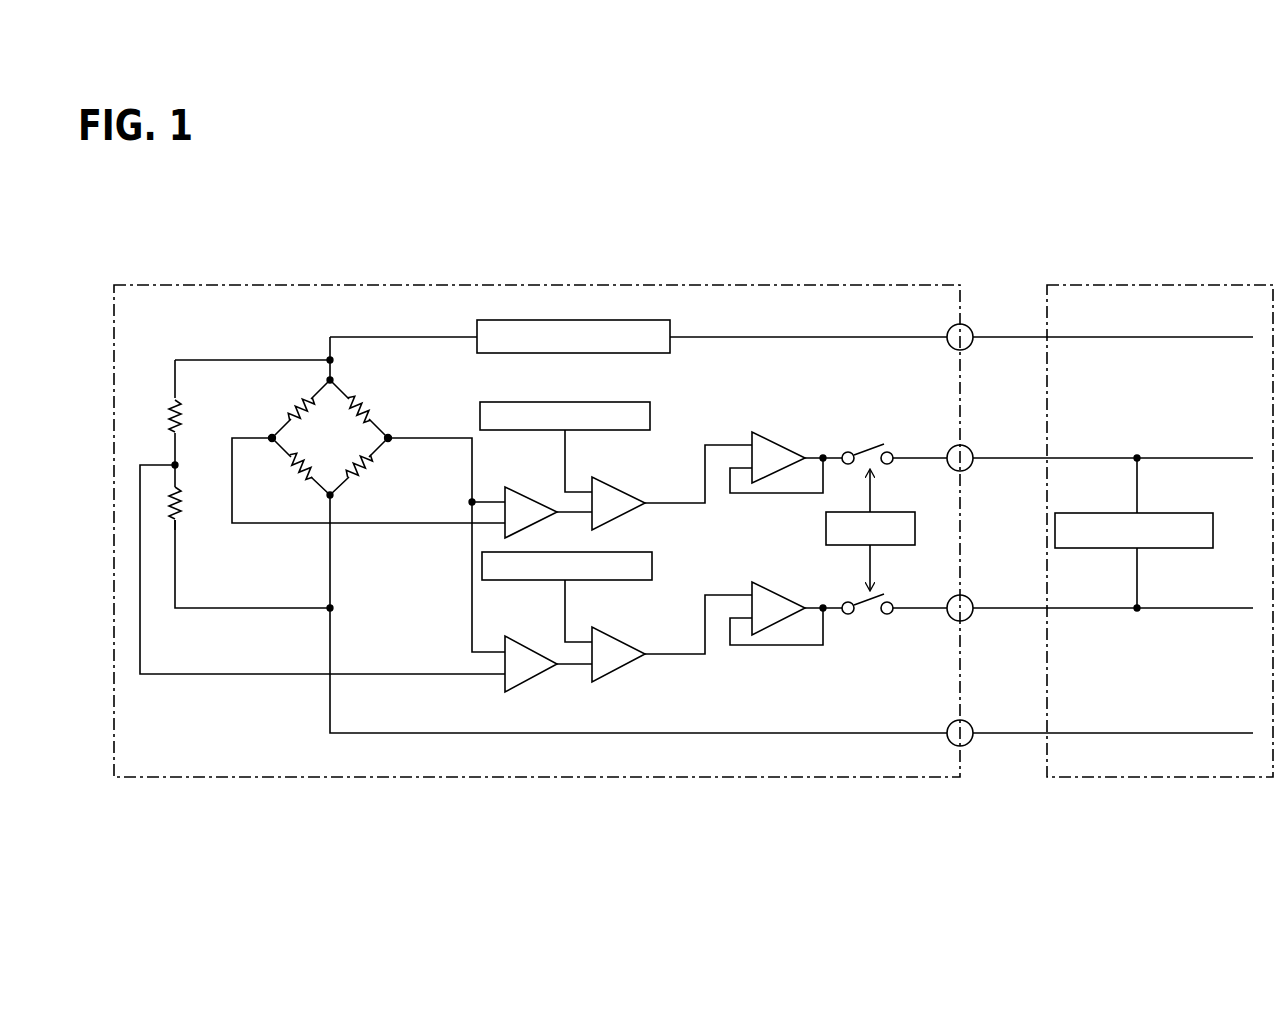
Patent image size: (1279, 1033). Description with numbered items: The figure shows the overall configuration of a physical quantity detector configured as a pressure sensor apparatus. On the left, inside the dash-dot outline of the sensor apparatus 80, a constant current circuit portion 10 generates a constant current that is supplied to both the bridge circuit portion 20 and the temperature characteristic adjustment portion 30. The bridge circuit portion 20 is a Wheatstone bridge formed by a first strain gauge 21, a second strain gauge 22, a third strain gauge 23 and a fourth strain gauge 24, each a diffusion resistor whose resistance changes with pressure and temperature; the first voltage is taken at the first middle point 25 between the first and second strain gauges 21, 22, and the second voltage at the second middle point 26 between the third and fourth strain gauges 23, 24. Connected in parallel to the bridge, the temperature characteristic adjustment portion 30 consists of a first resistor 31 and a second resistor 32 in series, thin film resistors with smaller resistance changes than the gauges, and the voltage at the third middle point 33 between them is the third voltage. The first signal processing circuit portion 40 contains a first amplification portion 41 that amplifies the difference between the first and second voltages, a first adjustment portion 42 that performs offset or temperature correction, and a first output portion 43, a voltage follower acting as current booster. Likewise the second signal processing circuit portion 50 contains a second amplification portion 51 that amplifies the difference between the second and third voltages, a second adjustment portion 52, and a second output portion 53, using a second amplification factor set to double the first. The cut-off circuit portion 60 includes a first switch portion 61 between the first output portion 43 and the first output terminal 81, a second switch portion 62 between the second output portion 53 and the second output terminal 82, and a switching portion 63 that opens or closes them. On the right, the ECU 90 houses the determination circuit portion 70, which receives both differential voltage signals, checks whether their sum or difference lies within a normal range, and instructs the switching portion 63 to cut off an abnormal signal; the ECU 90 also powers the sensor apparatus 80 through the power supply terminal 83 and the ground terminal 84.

The constant current circuit portion 10 is at (630, 320).
The bridge circuit portion 20 is at (332, 435).
The first strain gauge 21 is at (290, 408).
The second strain gauge 22 is at (296, 472).
The third strain gauge 23 is at (370, 400).
The fourth strain gauge 24 is at (364, 472).
The first middle point 25 is at (272, 446).
The second middle point 26 is at (389, 446).
The temperature characteristic adjustment portion 30 is at (172, 442).
The first resistor 31 is at (168, 420).
The second resistor 32 is at (182, 512).
The third middle point 33 is at (182, 468).
The first signal processing circuit portion 40 is at (663, 463).
The first amplification portion 41 is at (525, 490).
The first adjustment portion 42 is at (618, 480).
The first output portion 43 is at (775, 435).
The second signal processing circuit portion 50 is at (664, 614).
The second amplification portion 51 is at (525, 640).
The second adjustment portion 52 is at (618, 630).
The second output portion 53 is at (775, 585).
The cut-off circuit portion 60 is at (886, 494).
The first switch portion 61 is at (866, 440).
The second switch portion 62 is at (880, 598).
The switching portion 63 is at (915, 530).
The determination circuit portion 70 is at (1156, 513).
The sensor apparatus 80 is at (850, 285).
The first output terminal 81 is at (970, 448).
The second output terminal 82 is at (970, 598).
The power supply terminal 83 is at (970, 327).
The ground terminal 84 is at (970, 723).
The ECU 90 is at (1123, 503).